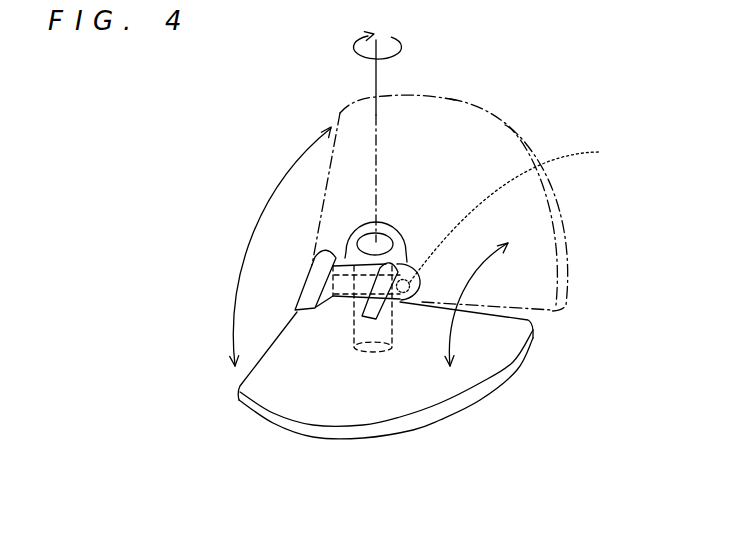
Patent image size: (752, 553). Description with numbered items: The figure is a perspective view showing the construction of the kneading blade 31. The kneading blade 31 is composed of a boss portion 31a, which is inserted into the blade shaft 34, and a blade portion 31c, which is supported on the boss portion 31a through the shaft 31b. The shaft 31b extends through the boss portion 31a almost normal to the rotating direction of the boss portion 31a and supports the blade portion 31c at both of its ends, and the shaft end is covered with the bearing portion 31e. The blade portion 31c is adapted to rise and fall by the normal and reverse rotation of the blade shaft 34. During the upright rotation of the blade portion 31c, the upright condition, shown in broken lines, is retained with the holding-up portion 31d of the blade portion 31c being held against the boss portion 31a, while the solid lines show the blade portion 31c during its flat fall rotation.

The kneading blade 31 is at (439, 414).
The boss portion 31a is at (350, 243).
The shaft 31b is at (534, 211).
The blade portion 31c is at (315, 403).
The holding-up portion 31d is at (346, 304).
The bearing portion 31e is at (420, 281).
The blade shaft 34 is at (393, 350).